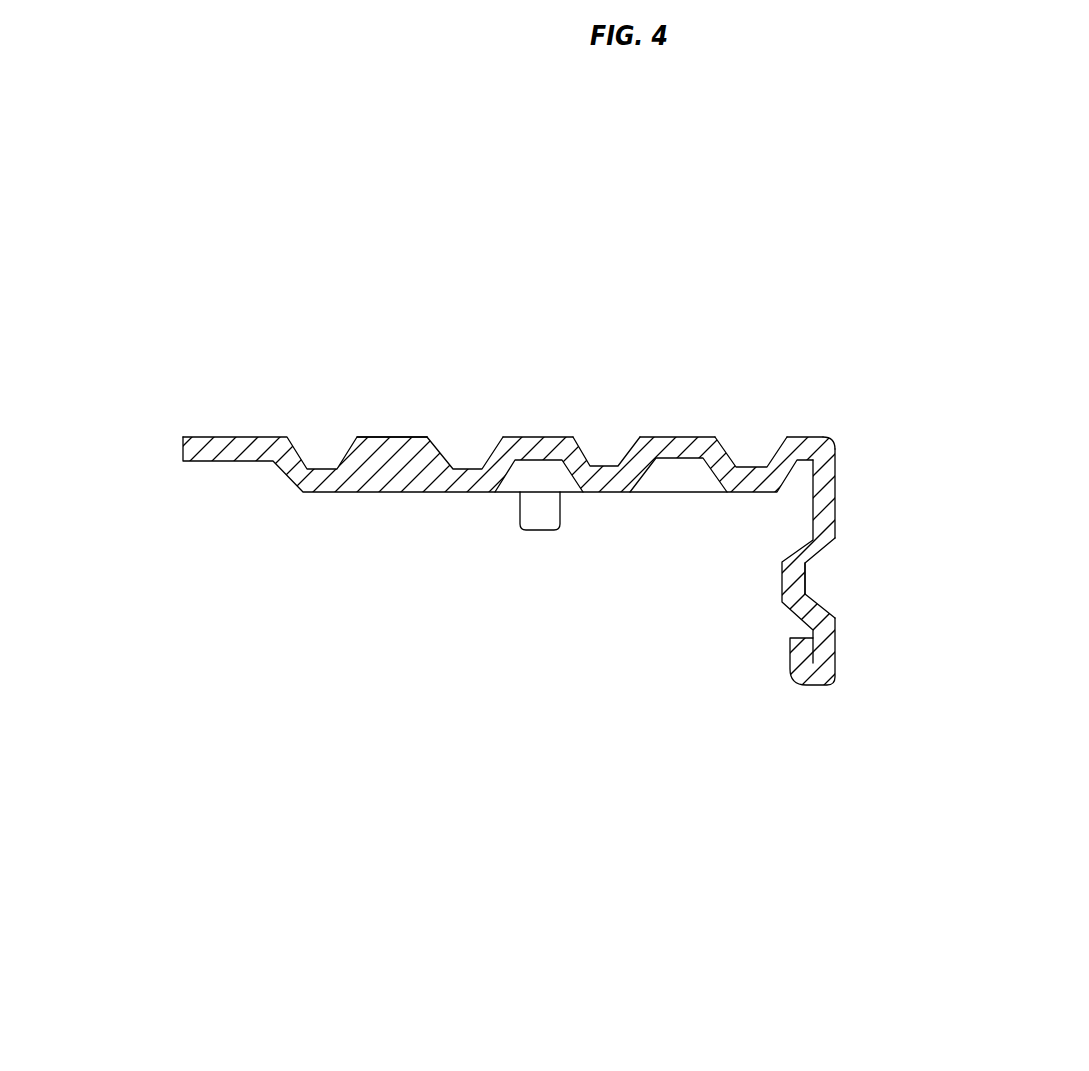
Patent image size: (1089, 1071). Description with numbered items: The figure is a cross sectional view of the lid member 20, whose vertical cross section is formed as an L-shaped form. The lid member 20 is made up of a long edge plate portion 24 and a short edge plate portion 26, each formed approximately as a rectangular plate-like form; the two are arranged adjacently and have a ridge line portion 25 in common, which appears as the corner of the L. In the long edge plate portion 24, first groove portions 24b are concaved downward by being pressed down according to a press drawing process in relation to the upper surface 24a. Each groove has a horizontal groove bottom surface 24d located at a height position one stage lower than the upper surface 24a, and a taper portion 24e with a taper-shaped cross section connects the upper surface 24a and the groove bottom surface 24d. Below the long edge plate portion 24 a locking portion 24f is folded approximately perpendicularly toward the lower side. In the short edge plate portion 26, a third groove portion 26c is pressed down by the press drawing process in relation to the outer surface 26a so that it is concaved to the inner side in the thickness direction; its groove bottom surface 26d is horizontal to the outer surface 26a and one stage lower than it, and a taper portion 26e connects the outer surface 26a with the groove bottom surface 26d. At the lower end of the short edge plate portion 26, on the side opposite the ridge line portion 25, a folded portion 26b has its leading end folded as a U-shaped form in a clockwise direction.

The lid member 20 is at (533, 193).
The long edge plate portion 24 is at (240, 437).
The upper surface 24a is at (362, 437).
The first groove portion 24b is at (465, 462).
The groove bottom surface 24d is at (602, 464).
The taper portion 24e is at (770, 455).
The locking portion 24f is at (520, 508).
The ridge line portion 25 is at (832, 436).
The short edge plate portion 26 is at (781, 577).
The outer surface 26a is at (938, 468).
The folded portion 26b is at (820, 686).
The third groove portion 26c is at (807, 570).
The groove bottom surface 26d is at (806, 590).
The taper portion 26e is at (818, 606).